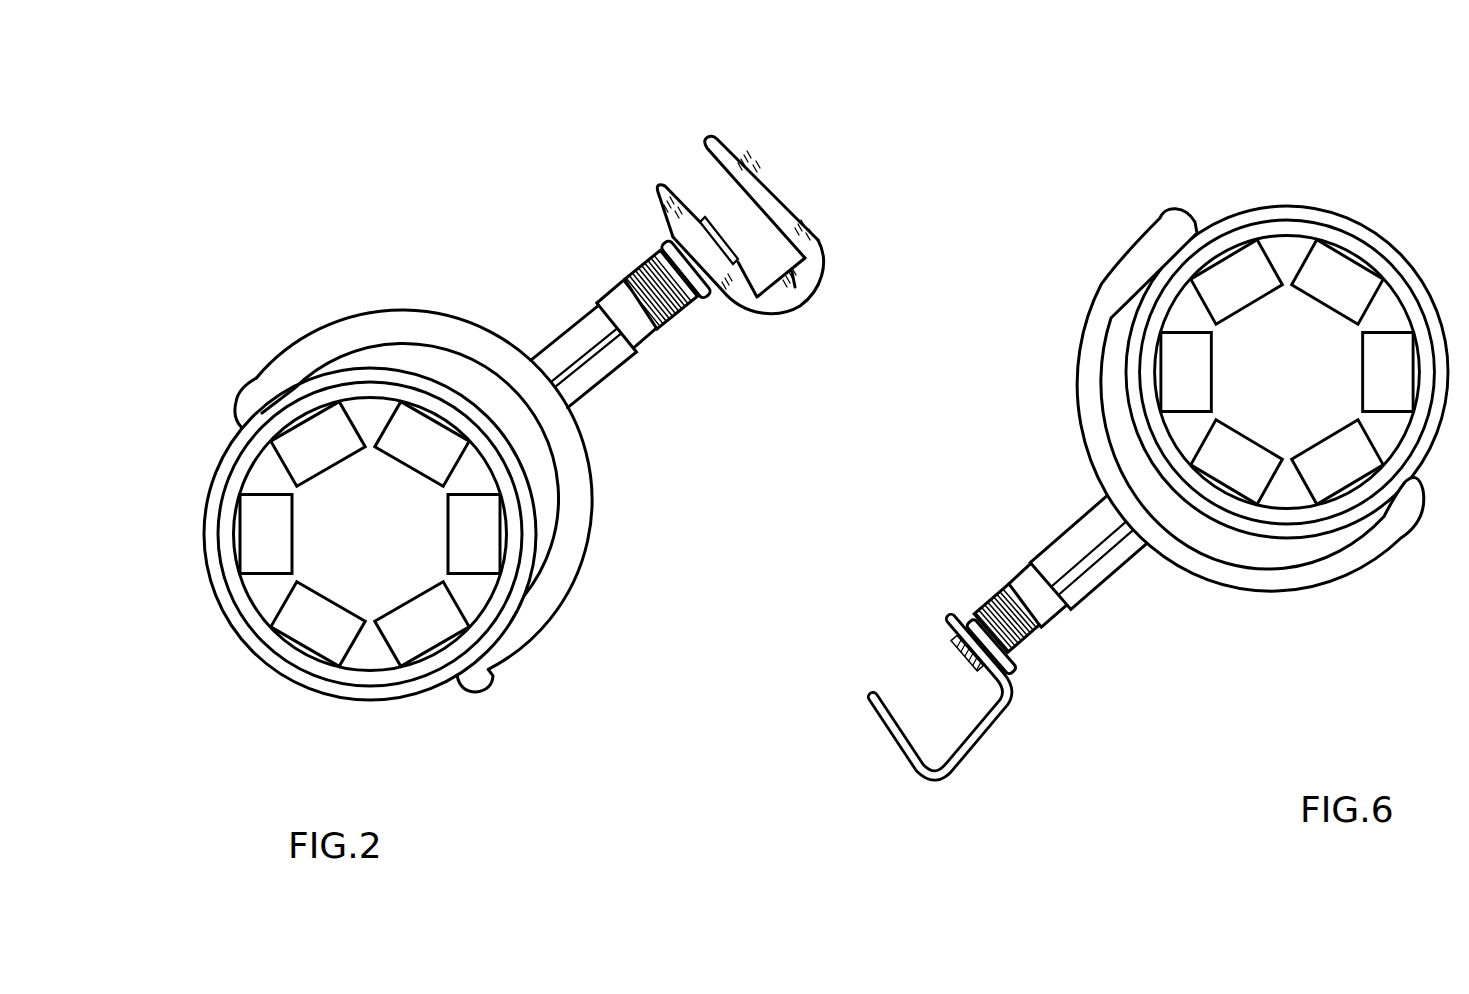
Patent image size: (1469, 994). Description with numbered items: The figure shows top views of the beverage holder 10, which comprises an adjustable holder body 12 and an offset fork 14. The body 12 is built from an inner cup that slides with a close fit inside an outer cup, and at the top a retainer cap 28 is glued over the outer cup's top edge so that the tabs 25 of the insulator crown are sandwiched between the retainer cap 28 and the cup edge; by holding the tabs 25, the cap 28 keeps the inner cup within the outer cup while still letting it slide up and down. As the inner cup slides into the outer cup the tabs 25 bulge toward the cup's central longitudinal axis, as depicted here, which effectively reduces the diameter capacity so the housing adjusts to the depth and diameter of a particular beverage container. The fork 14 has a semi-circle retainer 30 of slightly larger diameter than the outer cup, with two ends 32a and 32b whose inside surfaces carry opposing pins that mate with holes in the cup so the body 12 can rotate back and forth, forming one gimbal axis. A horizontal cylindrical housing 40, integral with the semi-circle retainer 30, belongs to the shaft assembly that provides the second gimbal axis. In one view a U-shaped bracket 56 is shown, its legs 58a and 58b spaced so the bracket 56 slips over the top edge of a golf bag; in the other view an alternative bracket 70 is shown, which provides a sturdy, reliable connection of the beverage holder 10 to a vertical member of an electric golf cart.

In FIG. 2, the beverage holder 10 is at (355, 178).
In FIG. 2, the adjustable holder body 12 is at (208, 597).
In FIG. 2, the offset fork 14 is at (492, 330).
In FIG. 2, the tabs 25 is at (327, 635).
In FIG. 2, the retainer cap 28 is at (262, 622).
In FIG. 2, the semi-circle retainer 30 is at (290, 347).
In FIG. 2, the end of the semi-circle retainer 32a is at (236, 401).
In FIG. 2, the end of the semi-circle retainer 32b is at (484, 693).
In FIG. 2, the cylindrical housing 40 is at (600, 387).
In FIG. 2, the U-shaped bracket 56 is at (717, 185).
In FIG. 2, the bracket leg 58a is at (814, 228).
In FIG. 2, the bracket leg 58b is at (660, 208).
In FIG. 6, the bracket 70 is at (963, 760).